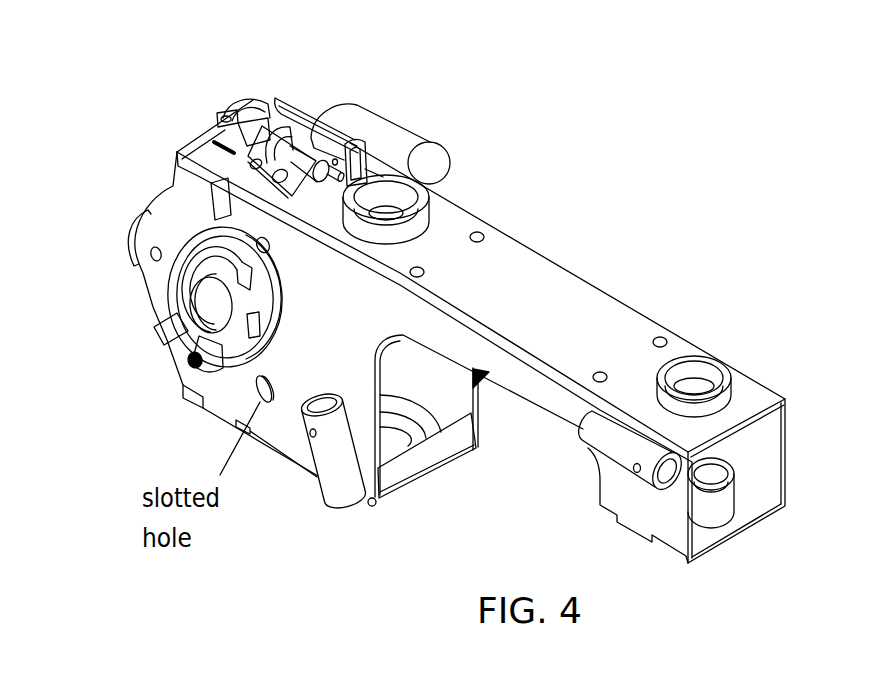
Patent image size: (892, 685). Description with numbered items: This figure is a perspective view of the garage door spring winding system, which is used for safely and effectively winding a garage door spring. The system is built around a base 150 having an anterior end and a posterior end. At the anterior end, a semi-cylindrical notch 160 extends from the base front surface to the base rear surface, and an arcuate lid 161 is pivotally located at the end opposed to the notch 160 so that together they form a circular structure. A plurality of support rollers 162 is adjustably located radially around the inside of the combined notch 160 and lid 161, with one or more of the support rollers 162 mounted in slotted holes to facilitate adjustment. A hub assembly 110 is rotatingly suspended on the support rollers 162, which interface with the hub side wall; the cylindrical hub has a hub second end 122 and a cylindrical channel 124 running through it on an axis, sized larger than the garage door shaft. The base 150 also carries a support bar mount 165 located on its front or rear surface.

The hub assembly 110 is at (239, 222).
The hub second end 122 is at (230, 338).
The cylindrical channel 124 is at (215, 308).
The base 150 is at (580, 278).
The semi-cylindrical notch 160 is at (275, 300).
The arcuate lid 161 is at (182, 193).
The support rollers 162 is at (128, 228).
The support bar mount 165 is at (323, 506).